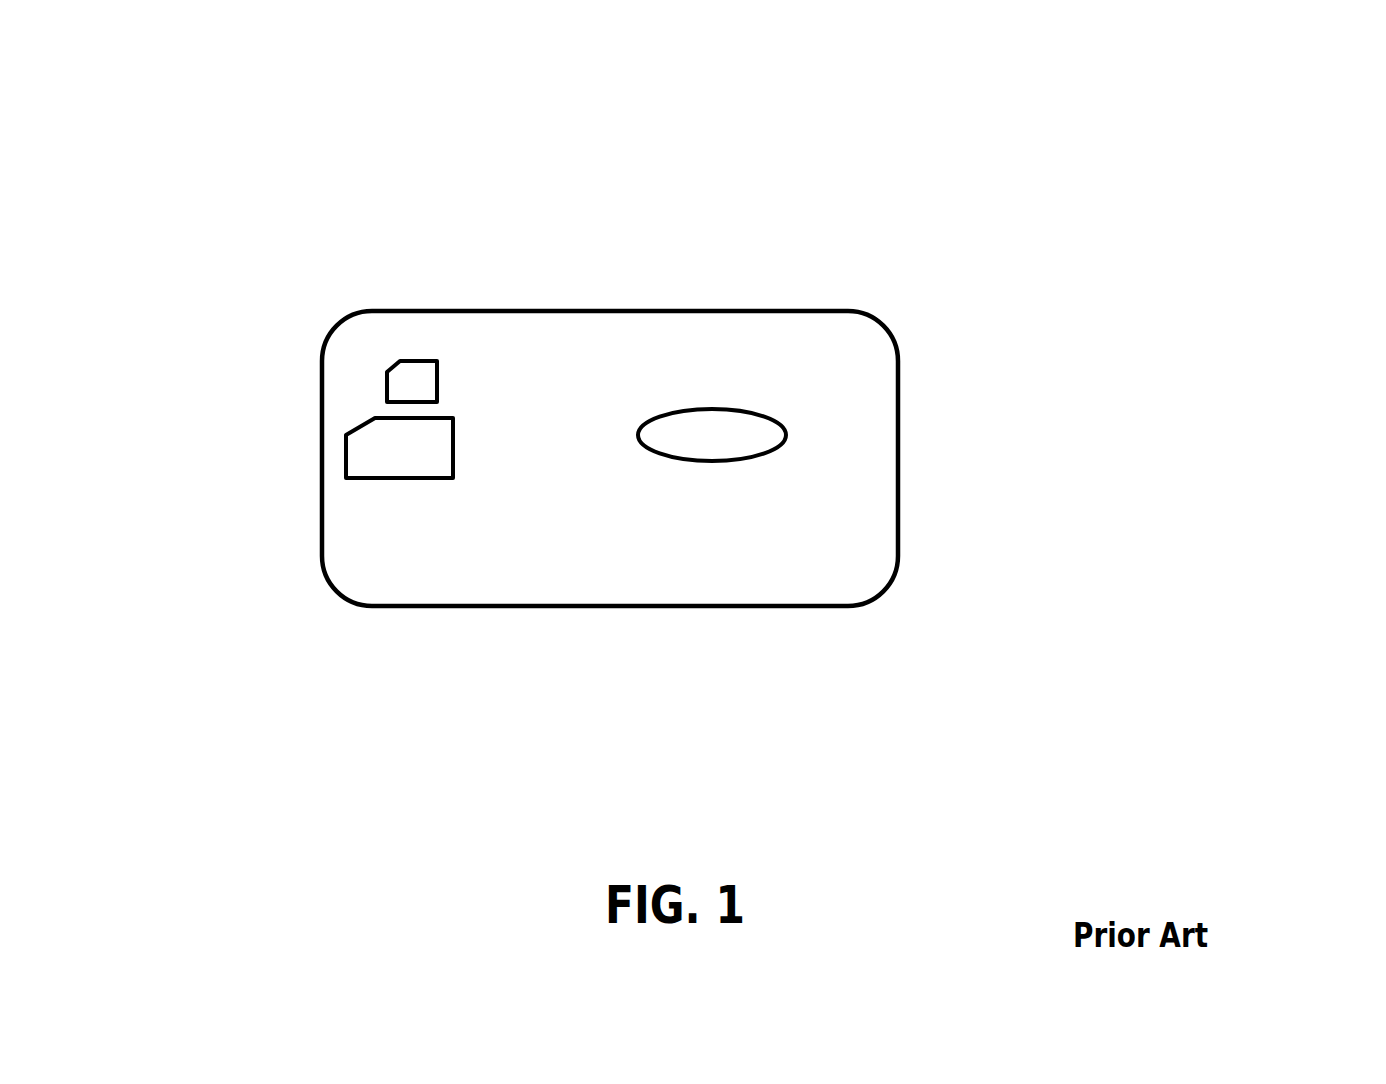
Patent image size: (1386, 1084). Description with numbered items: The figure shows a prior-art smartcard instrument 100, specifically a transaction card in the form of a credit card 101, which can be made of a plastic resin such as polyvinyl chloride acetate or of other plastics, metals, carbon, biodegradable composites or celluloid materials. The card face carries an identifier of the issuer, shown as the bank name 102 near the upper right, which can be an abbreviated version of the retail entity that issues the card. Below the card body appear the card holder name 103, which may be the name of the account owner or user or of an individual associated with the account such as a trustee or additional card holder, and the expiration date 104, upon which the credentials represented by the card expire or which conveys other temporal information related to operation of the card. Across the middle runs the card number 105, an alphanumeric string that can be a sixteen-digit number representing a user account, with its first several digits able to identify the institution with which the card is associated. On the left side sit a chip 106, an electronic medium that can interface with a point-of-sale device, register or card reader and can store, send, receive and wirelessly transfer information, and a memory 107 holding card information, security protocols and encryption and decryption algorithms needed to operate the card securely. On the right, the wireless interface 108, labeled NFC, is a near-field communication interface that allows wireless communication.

The prior art payment card 100 is at (1090, 181).
The credit card 101 is at (445, 303).
The bank name 102 is at (832, 350).
The card holder name 103 is at (433, 598).
The expiration date 104 is at (642, 607).
The card number 105 is at (443, 533).
The chip 106 is at (343, 445).
The memory 107 is at (373, 387).
The interface 108 is at (802, 445).